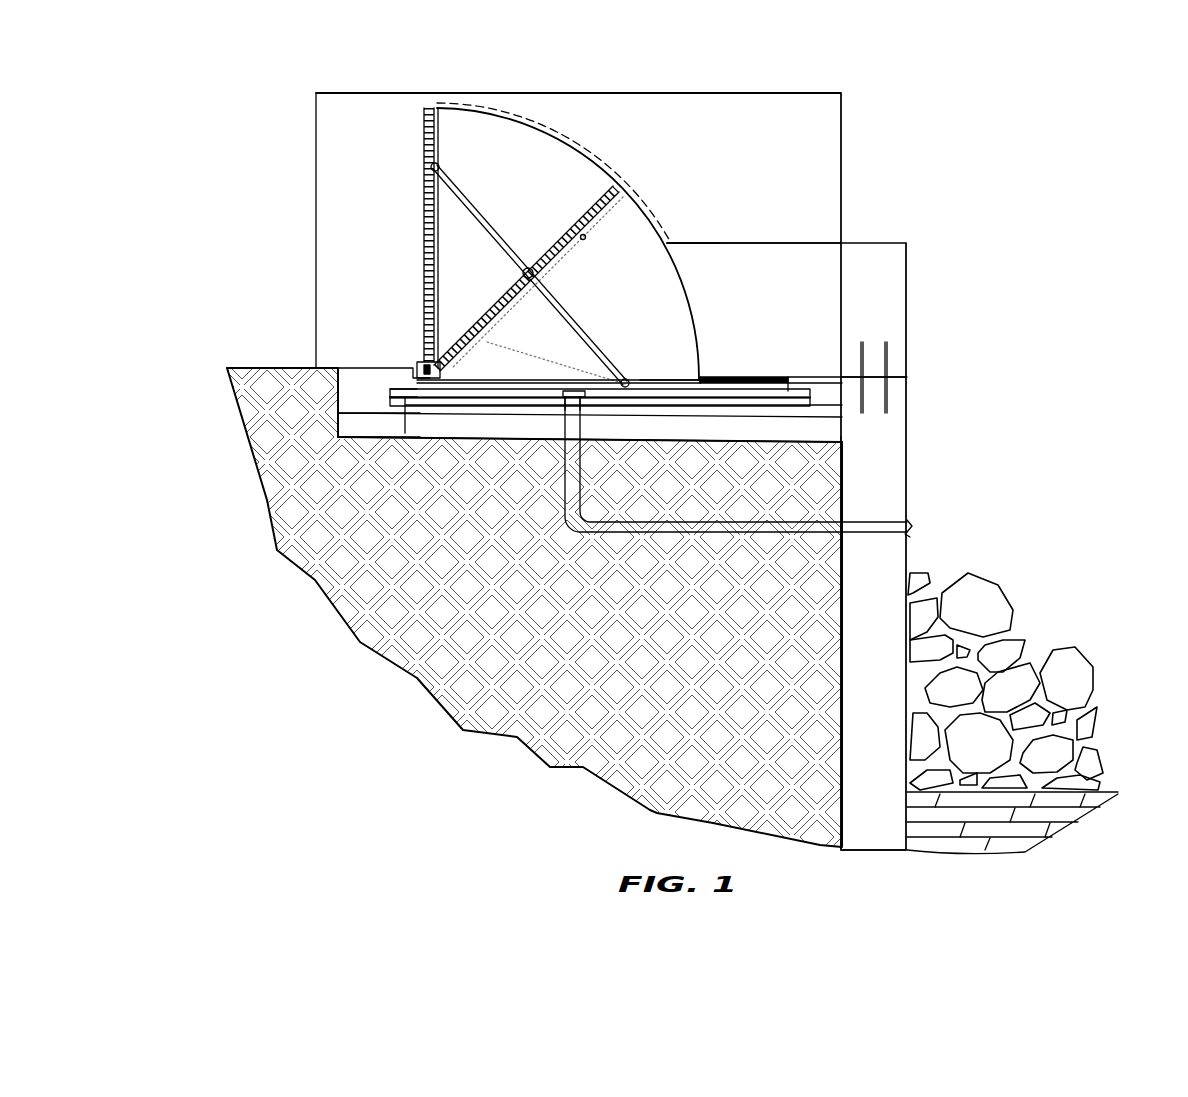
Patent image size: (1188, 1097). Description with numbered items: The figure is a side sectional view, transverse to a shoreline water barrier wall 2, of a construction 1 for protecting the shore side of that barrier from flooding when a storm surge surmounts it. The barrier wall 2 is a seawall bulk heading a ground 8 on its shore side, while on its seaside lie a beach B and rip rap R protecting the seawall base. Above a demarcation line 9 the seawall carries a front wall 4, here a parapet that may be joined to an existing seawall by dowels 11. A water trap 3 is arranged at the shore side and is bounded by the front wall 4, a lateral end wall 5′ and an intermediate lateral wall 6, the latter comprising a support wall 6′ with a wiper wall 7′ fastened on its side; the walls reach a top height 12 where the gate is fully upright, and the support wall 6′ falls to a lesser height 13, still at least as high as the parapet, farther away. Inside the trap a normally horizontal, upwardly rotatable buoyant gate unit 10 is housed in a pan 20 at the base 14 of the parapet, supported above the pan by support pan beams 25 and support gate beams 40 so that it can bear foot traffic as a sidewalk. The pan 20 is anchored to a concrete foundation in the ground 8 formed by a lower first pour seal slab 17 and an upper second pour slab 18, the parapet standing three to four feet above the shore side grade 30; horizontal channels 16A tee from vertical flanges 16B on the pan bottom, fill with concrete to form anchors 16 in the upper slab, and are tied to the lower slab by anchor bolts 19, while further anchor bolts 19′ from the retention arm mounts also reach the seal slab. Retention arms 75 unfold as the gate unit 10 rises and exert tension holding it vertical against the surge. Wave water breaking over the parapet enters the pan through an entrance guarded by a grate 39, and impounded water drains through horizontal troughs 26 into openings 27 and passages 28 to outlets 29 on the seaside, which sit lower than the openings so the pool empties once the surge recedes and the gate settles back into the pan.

The construction 1 is at (937, 122).
The barrier wall 2 is at (906, 450).
The water trap 3 is at (744, 324).
The front wall 4 is at (906, 310).
The lateral end wall 5′ is at (700, 93).
The intermediate lateral wall 6 is at (808, 243).
The support wall 6′ is at (607, 175).
The wiper wall 7′ is at (572, 144).
The ground 8 is at (258, 382).
The demarcation line 9 is at (906, 378).
The gate unit 10 is at (545, 243).
The dowels 11 is at (862, 400).
The top height 12 is at (437, 108).
The lesser height 13 is at (666, 243).
The base 14 is at (816, 377).
The anchors 16 is at (373, 397).
The horizontal channels 16A is at (378, 397).
The vertical flanges 16B is at (395, 396).
The first pour seal slab 17 is at (360, 427).
The second pour slab 18 is at (355, 380).
The anchor bolts 19 is at (405, 410).
The anchor bolts 19′ is at (626, 428).
The pan 20 is at (653, 378).
The support pan beams 25 is at (673, 390).
The horizontal troughs 26 is at (575, 398).
The openings 27 is at (565, 413).
The passages 28 is at (780, 527).
The outlets 29 is at (912, 530).
The shore side grade 30 is at (243, 367).
The grate 39 is at (748, 377).
The support gate beams 40 is at (588, 233).
The retention arms 75 is at (565, 310).
The rip rap R is at (1085, 680).
The beach B is at (1095, 800).